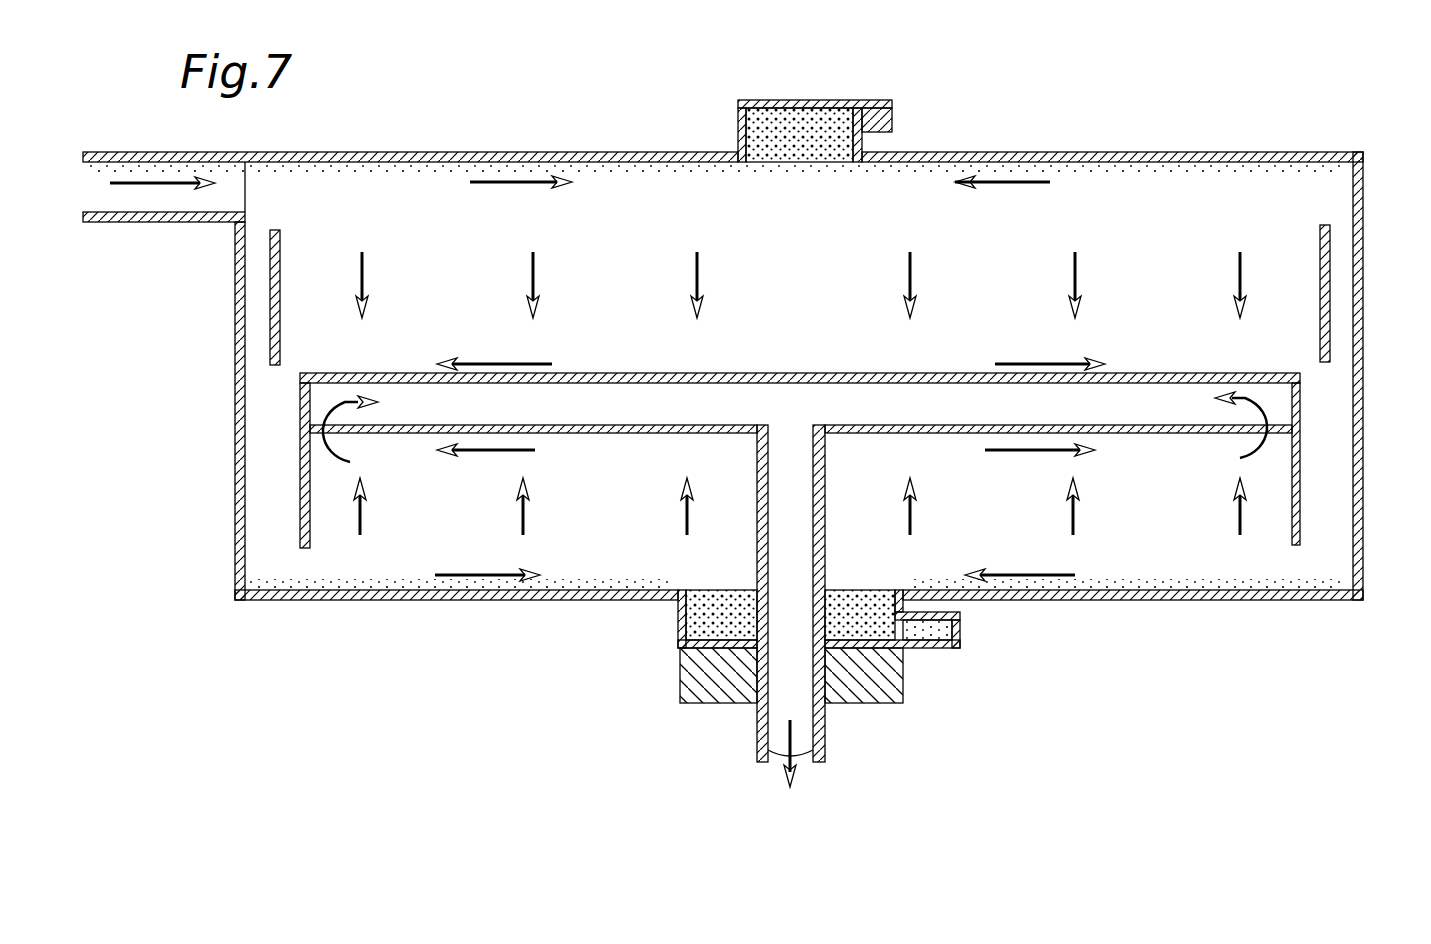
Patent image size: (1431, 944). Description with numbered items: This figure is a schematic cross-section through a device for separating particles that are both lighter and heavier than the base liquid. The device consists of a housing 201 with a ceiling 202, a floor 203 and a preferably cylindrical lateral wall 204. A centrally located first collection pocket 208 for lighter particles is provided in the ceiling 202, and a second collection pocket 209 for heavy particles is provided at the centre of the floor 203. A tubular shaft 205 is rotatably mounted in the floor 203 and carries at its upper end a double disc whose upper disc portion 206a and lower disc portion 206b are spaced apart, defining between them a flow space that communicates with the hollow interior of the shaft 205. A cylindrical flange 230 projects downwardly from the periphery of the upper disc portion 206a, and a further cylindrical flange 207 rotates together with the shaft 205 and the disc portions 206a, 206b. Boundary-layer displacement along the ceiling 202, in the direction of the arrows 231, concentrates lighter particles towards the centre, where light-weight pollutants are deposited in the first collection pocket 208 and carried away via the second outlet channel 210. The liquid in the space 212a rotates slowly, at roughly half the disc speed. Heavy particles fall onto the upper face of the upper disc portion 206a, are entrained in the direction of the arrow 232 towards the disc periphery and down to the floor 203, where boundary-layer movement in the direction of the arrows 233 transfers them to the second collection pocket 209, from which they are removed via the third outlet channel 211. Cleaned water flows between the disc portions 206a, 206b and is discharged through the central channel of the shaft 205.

The housing 201 is at (1105, 150).
The ceiling 202 is at (1228, 150).
The floor 203 is at (1138, 600).
The lateral wall 204 is at (1360, 463).
The tubular shaft 205 is at (825, 725).
The upper disc portion 206a is at (1182, 373).
The lower disc portion 206b is at (1210, 433).
The cylindrical flange 207 is at (270, 318).
The first collection pocket 208 is at (768, 127).
The second collection pocket 209 is at (700, 630).
The second outlet channel 210 is at (890, 118).
The third outlet channel 211 is at (955, 632).
The space 212a is at (688, 378).
The cylindrical flange 230 is at (300, 453).
The arrows 231 is at (525, 182).
The arrow 232 is at (495, 364).
The arrows 233 is at (485, 575).